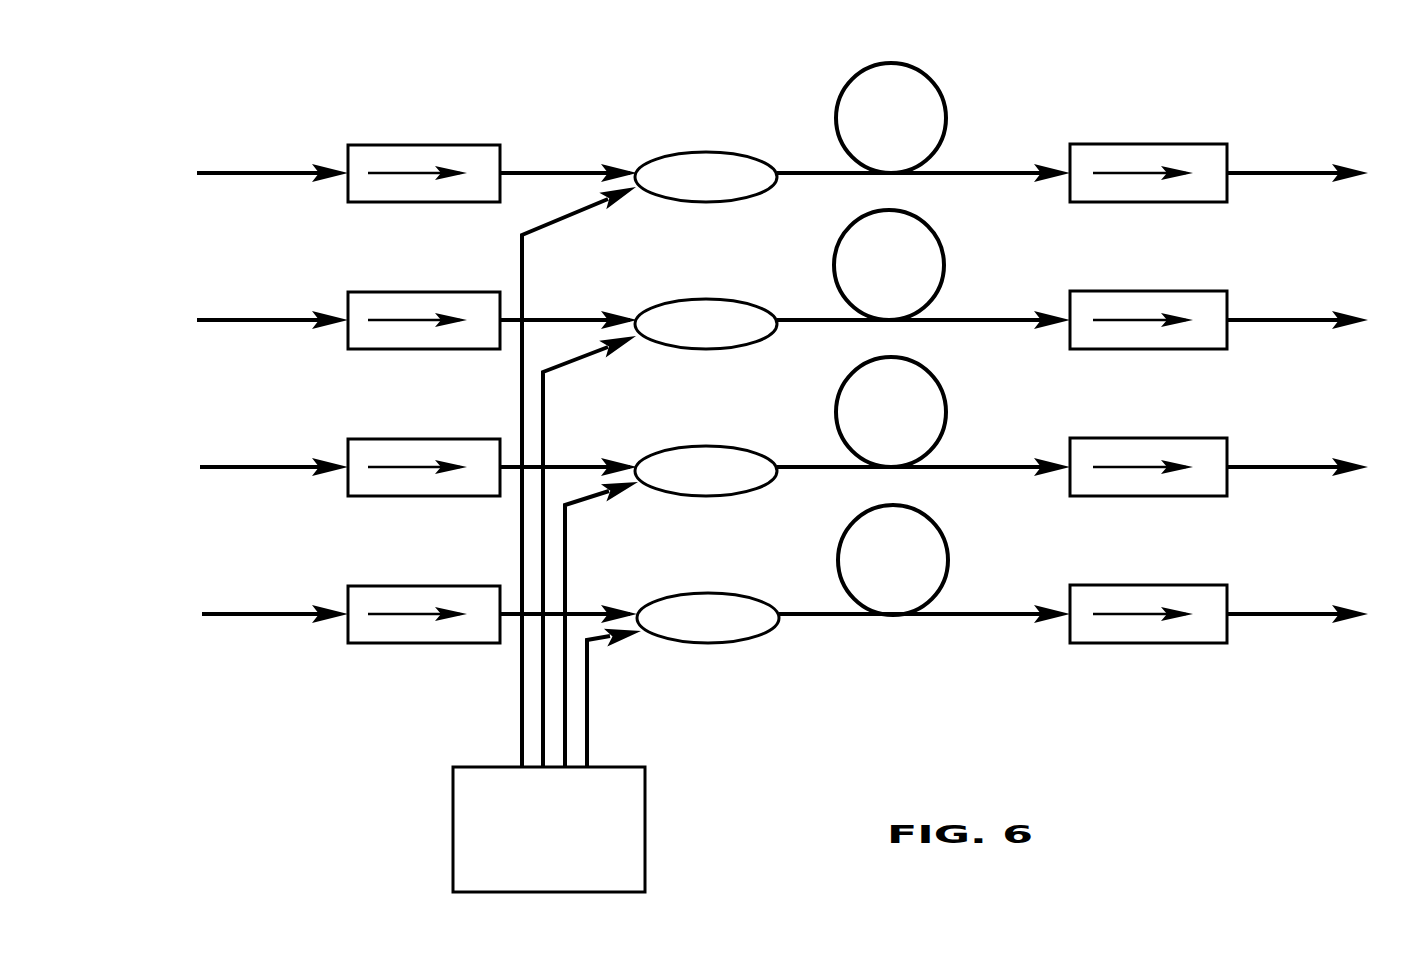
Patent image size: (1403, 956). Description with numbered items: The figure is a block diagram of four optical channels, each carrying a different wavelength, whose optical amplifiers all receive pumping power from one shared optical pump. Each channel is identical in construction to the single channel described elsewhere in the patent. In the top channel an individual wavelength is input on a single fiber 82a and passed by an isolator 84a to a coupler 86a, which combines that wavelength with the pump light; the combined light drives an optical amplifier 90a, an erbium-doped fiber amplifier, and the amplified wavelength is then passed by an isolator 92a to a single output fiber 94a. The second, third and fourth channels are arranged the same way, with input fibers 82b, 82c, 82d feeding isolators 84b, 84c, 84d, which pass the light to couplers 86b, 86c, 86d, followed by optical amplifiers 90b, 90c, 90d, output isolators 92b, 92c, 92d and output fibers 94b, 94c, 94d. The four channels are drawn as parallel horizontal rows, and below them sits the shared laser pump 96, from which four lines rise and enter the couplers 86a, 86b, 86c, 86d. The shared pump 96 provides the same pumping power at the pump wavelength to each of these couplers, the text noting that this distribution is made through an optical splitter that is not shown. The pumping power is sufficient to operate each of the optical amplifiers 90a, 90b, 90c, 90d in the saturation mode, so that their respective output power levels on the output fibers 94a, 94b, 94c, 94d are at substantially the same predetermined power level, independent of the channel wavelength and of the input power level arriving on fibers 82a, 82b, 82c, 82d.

The single fiber 82a is at (247, 170).
The single fiber 82b is at (260, 317).
The single fiber 82c is at (257, 464).
The single fiber 82d is at (264, 611).
The isolator 84a is at (417, 144).
The isolator 84b is at (404, 291).
The isolator 84c is at (399, 438).
The isolator 84d is at (397, 585).
The coupler 86a is at (703, 152).
The coupler 86b is at (698, 299).
The coupler 86c is at (698, 446).
The coupler 86d is at (700, 593).
The optical amplifier 90a is at (918, 71).
The optical amplifier 90b is at (937, 240).
The optical amplifier 90c is at (940, 388).
The optical amplifier 90d is at (942, 546).
The isolator 92a is at (1148, 144).
The isolator 92b is at (1136, 291).
The isolator 92c is at (1136, 438).
The isolator 92d is at (1131, 585).
The single output fiber 94a is at (1296, 168).
The single output fiber 94b is at (1280, 315).
The single output fiber 94c is at (1274, 462).
The single output fiber 94d is at (1268, 610).
The shared laser pump 96 is at (630, 840).